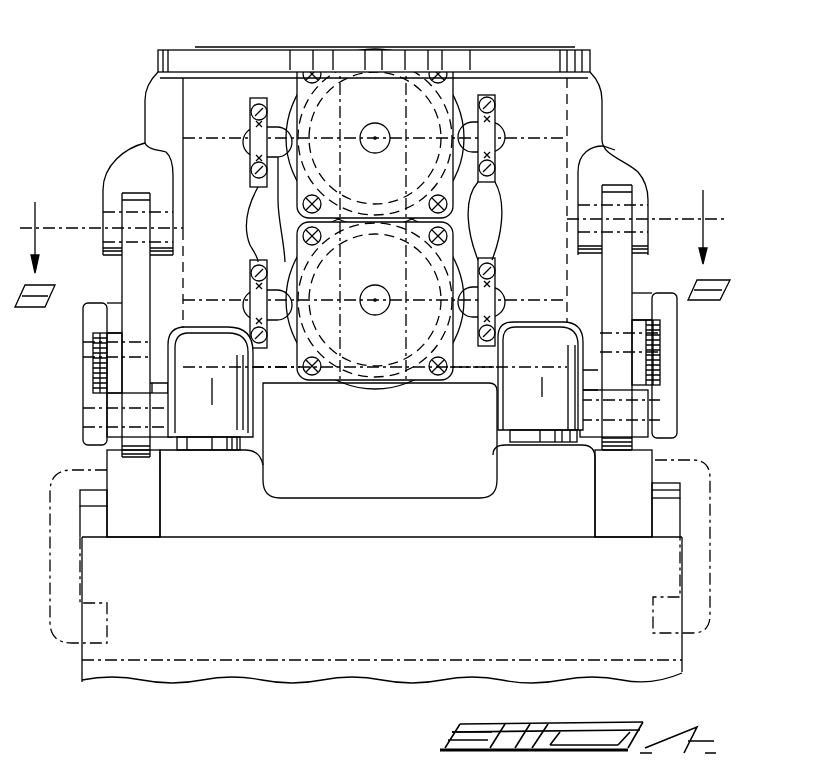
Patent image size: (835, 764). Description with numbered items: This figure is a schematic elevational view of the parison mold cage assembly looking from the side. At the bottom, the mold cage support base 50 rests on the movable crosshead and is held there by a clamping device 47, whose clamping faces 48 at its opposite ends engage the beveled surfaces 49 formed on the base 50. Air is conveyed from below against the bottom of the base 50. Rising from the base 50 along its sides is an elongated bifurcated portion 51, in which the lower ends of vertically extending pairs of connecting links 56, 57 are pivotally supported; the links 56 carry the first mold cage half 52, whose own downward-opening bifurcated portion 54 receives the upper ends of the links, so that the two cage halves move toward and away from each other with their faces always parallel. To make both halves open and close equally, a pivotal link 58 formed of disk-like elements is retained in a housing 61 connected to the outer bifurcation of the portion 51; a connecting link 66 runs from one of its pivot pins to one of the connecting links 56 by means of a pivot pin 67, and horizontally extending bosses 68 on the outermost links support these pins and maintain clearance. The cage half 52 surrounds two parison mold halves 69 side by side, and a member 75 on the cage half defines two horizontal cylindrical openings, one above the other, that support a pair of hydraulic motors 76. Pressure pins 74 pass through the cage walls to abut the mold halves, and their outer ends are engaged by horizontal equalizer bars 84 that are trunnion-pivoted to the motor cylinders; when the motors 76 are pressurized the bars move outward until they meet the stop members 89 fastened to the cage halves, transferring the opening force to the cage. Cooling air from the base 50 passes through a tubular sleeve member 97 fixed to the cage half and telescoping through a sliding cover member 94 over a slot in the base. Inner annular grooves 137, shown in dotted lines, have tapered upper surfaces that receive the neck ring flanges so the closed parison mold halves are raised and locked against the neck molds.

The clamping device 47 is at (703, 506).
The clamping faces 48 is at (680, 485).
The beveled surfaces 49 is at (652, 492).
The mold cage support base 50 is at (395, 503).
The bifurcated portion 51 is at (112, 452).
The first mold cage half 52 is at (585, 90).
The bifurcated portion 54 is at (118, 178).
The connecting links 56 is at (137, 272).
The connecting links 57 is at (324, 759).
The pivotal link 58 is at (78, 395).
The housing 61 is at (93, 418).
The connecting link 66 is at (96, 341).
The pivot pin 67 is at (97, 352).
The bosses 68 is at (113, 334).
The parison mold halves 69 is at (170, 62).
The pressure pins 74 is at (247, 138).
The member 75 is at (485, 200).
The hydraulic motors 76 is at (387, 104).
The equalizer bars 84 is at (271, 209).
The stop members 89 is at (246, 205).
The cover member 94 is at (258, 452).
The tubular sleeve member 97 is at (250, 437).
The inner annular grooves 137 is at (212, 57).